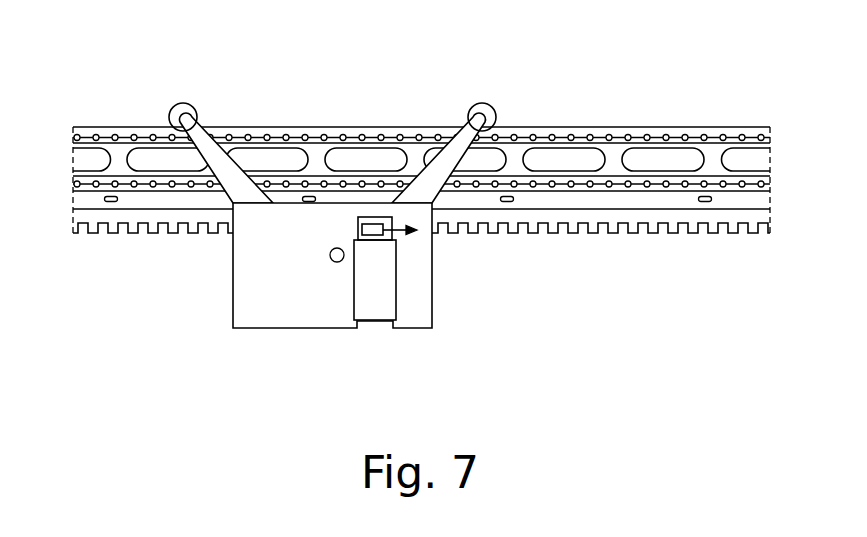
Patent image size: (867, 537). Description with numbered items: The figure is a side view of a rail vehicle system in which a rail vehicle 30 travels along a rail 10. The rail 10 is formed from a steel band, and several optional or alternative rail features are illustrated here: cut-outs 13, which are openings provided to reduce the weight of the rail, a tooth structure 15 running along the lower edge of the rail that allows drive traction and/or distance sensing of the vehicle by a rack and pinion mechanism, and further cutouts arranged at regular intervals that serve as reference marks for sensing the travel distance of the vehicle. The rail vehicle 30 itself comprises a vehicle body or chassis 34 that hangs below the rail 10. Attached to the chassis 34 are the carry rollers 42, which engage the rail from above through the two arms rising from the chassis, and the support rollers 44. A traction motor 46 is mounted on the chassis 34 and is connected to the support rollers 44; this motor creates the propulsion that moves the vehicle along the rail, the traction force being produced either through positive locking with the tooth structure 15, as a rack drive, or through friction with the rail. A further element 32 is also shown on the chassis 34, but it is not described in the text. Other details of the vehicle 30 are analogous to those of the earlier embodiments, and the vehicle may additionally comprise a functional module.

The rail 10 is at (419, 135).
The cut-outs 13 is at (652, 162).
The tooth structure 15 is at (540, 222).
The rail vehicle 30 is at (302, 213).
The wheel / pin 32 is at (337, 262).
The vehicle body (chassis) 34 is at (342, 311).
The carry rollers 42 is at (478, 103).
The support rollers 44 is at (374, 235).
The traction motor 46 is at (383, 308).